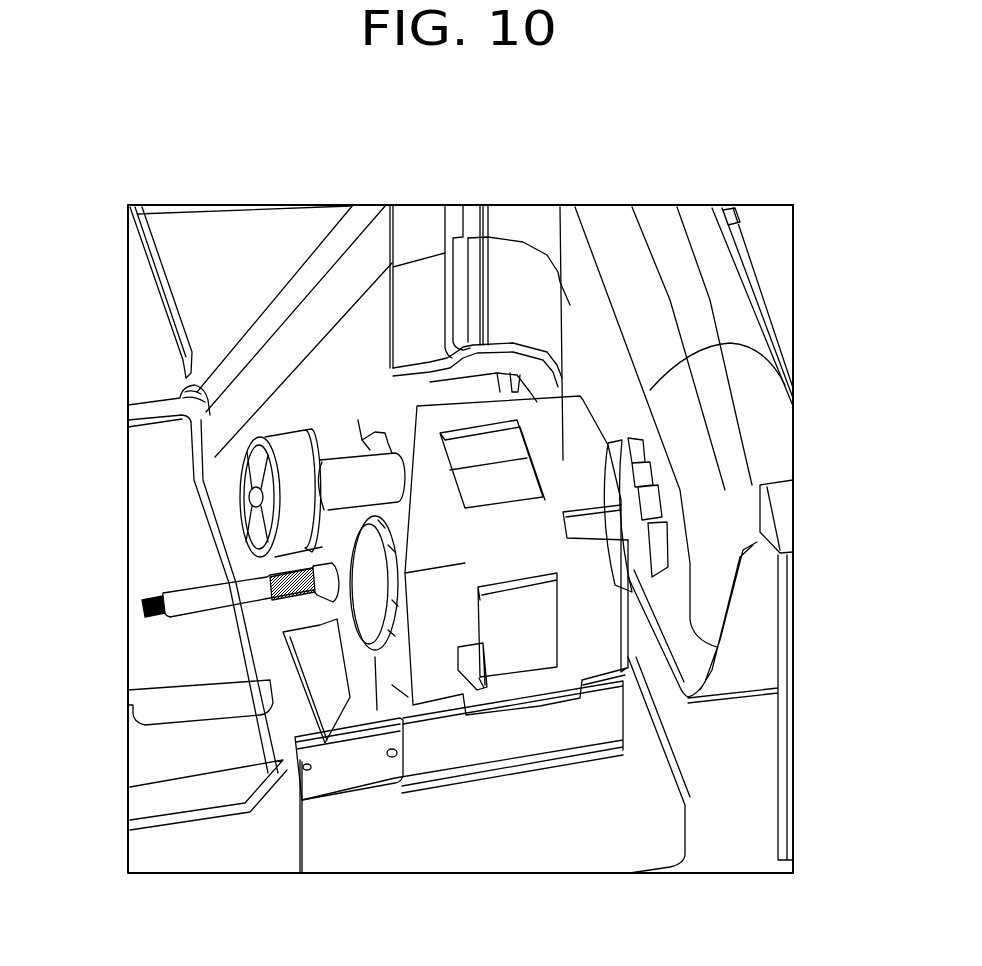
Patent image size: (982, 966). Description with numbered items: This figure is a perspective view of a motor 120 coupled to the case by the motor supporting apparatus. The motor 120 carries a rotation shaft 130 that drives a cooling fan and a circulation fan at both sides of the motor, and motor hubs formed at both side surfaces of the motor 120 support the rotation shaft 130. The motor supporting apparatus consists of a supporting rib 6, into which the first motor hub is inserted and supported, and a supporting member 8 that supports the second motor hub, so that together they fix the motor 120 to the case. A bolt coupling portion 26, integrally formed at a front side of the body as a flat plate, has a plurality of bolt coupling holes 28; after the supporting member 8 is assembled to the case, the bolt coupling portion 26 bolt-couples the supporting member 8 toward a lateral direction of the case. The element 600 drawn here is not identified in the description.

The motor 120 is at (563, 463).
The supporting rib 6 is at (643, 477).
The rotation shaft 130 is at (213, 600).
The supporting member 8 is at (285, 672).
The bolt coupling holes 28 is at (310, 770).
The bolt coupling portion 26 is at (375, 773).
The motor base rail 600 is at (525, 692).